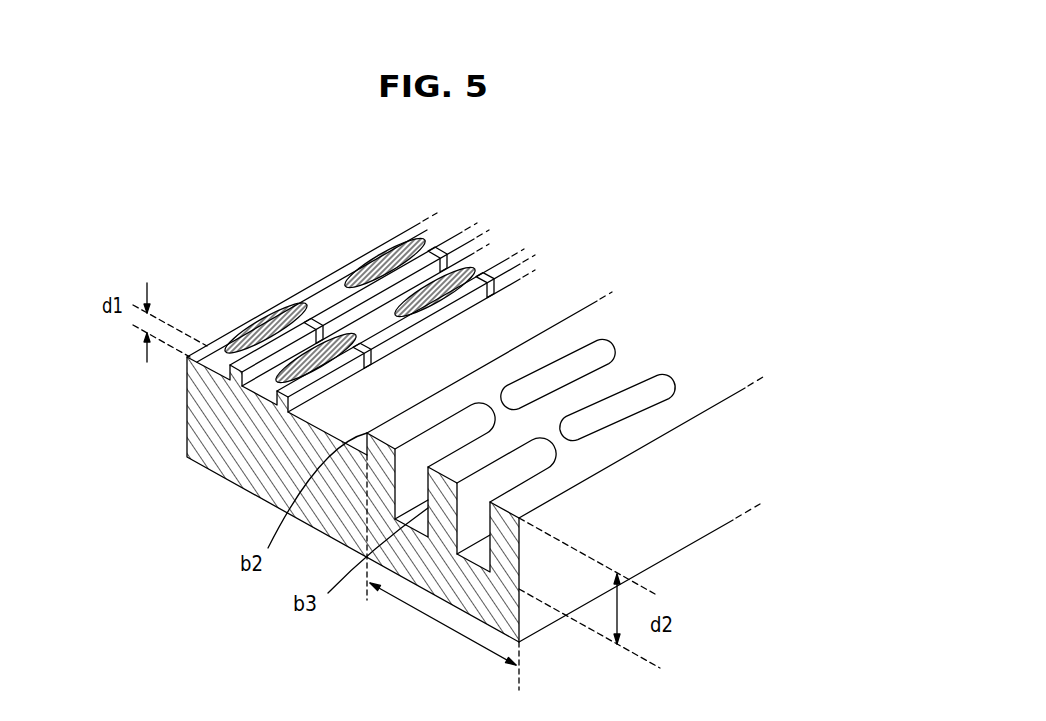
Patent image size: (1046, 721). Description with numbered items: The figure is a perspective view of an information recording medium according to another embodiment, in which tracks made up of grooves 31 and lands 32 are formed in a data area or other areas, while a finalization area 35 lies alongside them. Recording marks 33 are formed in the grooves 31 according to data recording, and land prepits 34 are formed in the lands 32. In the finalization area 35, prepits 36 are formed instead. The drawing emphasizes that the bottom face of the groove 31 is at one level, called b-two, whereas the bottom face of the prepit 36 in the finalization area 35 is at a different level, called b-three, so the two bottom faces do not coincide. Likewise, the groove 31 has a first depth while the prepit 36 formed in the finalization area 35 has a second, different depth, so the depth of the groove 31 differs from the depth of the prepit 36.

The groove 31 is at (244, 390).
The land 32 is at (280, 395).
The recording mark 33 is at (362, 278).
The land prepit 34 is at (442, 258).
The finalization area 35 is at (419, 546).
The prepit 36 is at (662, 387).